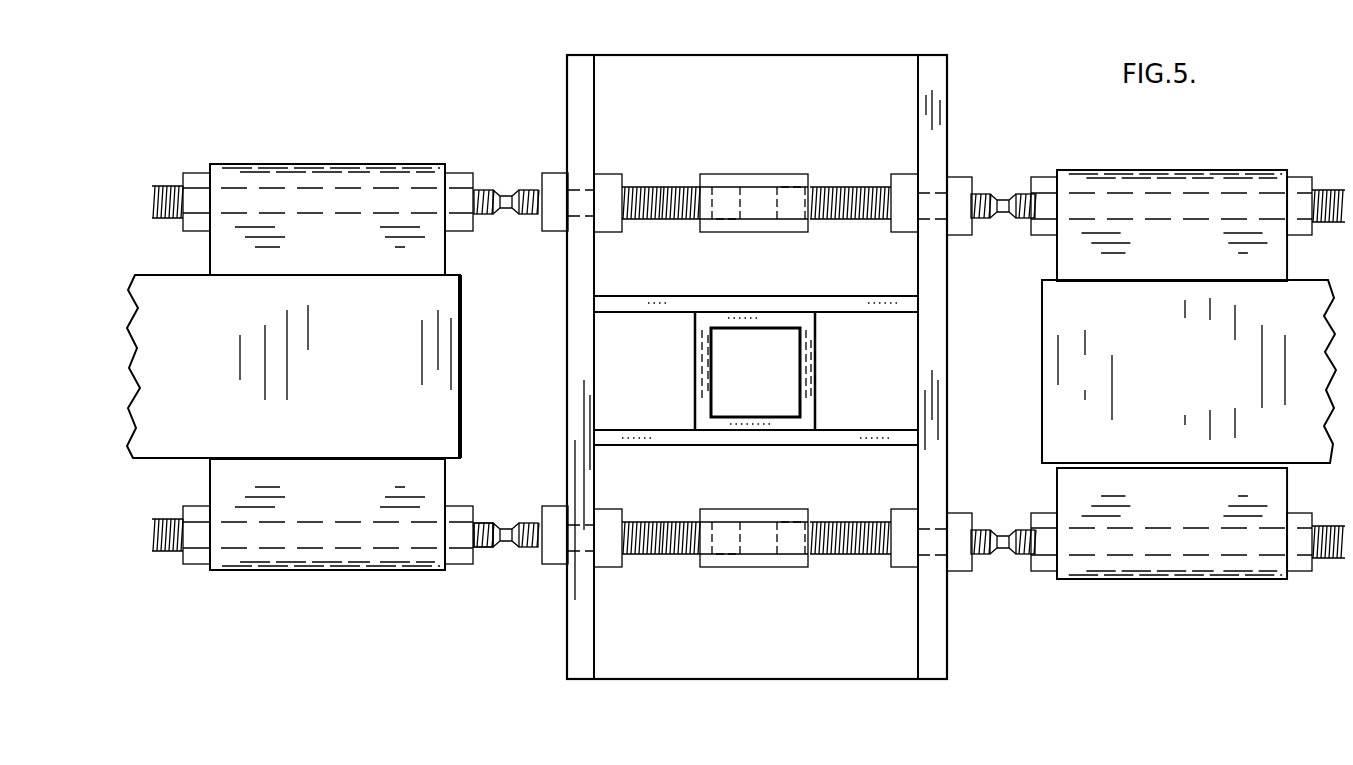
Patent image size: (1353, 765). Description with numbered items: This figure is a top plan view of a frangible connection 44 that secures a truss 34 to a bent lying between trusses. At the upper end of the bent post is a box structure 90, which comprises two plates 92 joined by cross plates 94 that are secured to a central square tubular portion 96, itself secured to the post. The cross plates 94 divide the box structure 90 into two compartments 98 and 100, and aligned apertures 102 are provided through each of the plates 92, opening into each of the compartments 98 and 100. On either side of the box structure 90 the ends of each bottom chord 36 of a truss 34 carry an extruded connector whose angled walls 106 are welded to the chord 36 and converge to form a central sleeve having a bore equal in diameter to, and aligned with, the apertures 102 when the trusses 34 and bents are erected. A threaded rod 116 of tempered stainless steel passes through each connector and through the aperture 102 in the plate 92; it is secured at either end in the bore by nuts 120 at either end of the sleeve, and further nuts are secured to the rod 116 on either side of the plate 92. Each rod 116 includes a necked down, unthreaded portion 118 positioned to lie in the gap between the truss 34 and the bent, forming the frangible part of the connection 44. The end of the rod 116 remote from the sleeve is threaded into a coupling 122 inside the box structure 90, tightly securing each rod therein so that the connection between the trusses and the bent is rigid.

The truss 34 is at (349, 131).
The bottom chord 36 is at (370, 378).
The frangible connection 44 is at (1009, 133).
The box structure 90 is at (727, 684).
The plate 92 is at (947, 388).
The cross plate 94 is at (645, 312).
The central square tubular portion 96 is at (819, 386).
The compartment 98 is at (845, 145).
The compartment 100 is at (875, 483).
The aperture 102 is at (614, 155).
The angled wall 106 is at (354, 256).
The threaded rod 116 is at (485, 581).
The necked down unthreaded portion 118 is at (501, 186).
The nut 120 is at (200, 148).
The coupling 122 is at (745, 173).